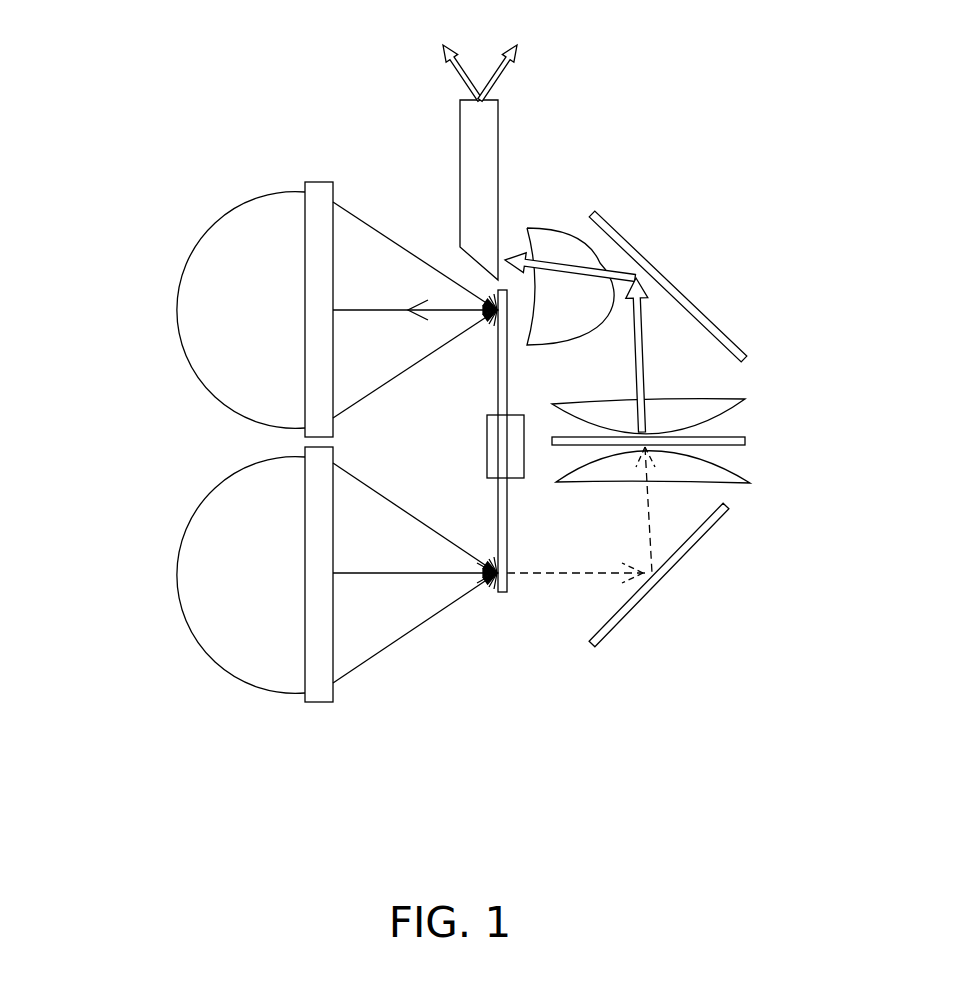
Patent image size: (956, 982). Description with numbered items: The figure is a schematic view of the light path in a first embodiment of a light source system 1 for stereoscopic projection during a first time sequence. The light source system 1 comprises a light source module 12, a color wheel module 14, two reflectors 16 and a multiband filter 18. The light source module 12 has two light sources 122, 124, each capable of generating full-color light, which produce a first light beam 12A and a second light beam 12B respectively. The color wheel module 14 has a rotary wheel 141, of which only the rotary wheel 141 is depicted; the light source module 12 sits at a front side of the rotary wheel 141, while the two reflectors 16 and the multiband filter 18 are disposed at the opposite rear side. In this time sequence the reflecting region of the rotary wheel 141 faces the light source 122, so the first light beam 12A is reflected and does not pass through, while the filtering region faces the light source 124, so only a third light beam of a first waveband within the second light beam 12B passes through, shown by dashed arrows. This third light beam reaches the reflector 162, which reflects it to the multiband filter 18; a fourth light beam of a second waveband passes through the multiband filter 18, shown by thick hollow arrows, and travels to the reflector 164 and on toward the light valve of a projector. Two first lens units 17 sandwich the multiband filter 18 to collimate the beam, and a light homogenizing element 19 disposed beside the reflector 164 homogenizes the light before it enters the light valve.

The light source system for stereoscopic projection 1 is at (220, 58).
The light source module 12 is at (95, 300).
The light source 122 is at (177, 302).
The light source 124 is at (177, 574).
The first light beam 12A is at (415, 310).
The second light beam 12B is at (415, 573).
The color wheel module 14 is at (498, 287).
The rotary wheel 141 is at (502, 441).
The reflectors 16 is at (813, 252).
The reflector 162 is at (657, 574).
The reflector 164 is at (645, 253).
The first lens units 17 is at (615, 417).
The multiband filter 18 is at (563, 441).
The light homogenizing element 19 is at (473, 130).